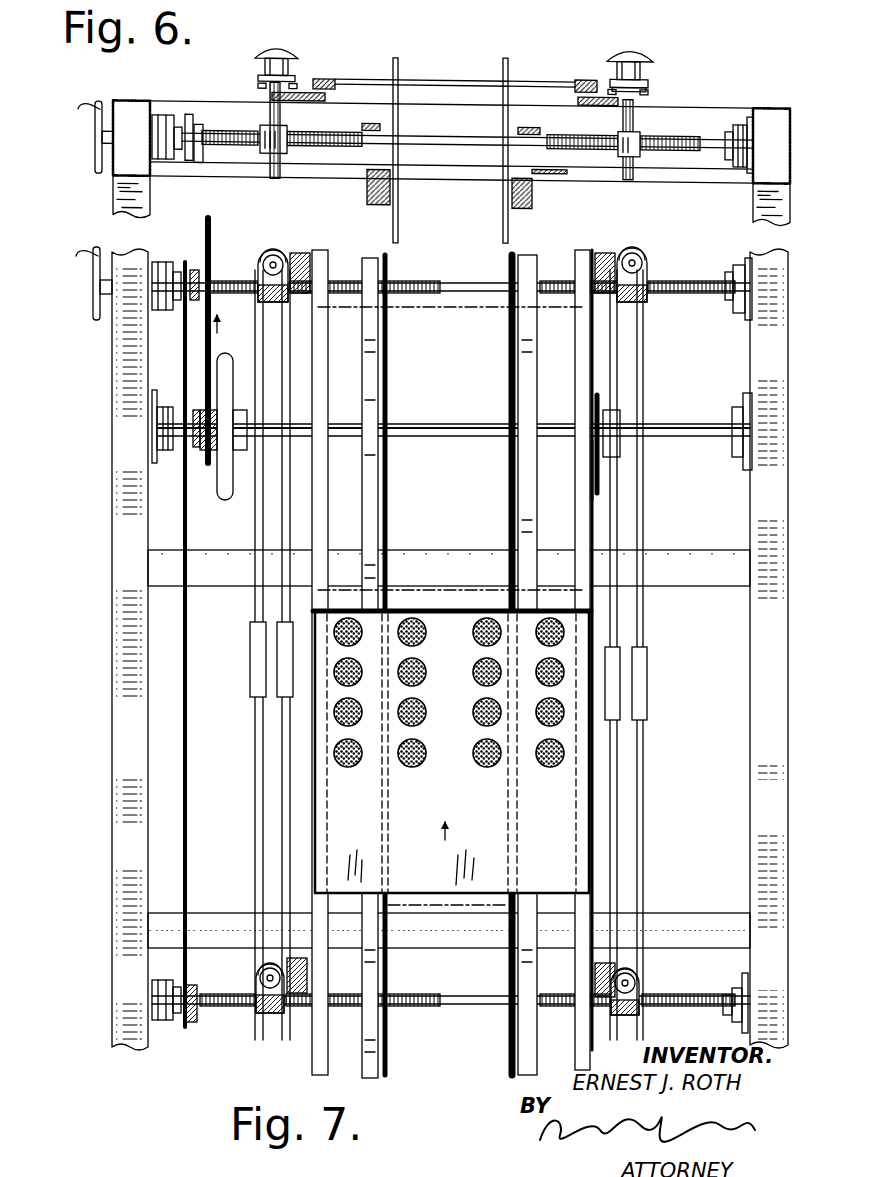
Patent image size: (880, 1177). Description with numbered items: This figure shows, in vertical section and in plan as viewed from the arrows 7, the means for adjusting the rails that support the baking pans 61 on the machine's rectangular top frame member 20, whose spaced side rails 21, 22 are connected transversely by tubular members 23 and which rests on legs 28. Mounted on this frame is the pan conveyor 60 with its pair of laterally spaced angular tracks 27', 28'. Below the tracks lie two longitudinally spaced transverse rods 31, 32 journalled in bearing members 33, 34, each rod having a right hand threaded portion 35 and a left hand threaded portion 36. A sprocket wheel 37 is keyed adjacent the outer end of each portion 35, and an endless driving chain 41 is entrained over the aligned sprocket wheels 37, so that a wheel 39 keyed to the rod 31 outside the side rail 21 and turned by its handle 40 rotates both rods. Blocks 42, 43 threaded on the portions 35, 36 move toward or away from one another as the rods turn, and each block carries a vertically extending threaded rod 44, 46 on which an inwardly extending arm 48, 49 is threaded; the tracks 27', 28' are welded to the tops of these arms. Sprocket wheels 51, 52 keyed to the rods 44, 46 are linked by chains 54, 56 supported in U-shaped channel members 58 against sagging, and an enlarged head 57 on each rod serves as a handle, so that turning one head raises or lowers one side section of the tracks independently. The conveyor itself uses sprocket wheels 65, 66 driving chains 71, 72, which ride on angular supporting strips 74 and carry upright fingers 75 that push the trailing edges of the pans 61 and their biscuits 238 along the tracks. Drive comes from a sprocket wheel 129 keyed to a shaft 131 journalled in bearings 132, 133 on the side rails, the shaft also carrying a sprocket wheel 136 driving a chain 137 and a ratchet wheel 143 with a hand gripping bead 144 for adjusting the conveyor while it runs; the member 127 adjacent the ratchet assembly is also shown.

In FIG. 6, the viewing arrows 7 is at (453, 42).
In FIG. 7, the rectangular top frame member 20 is at (108, 782).
In FIG. 6, the side rail 21 is at (125, 160).
In FIG. 7, the side rail 21 is at (122, 568).
In FIG. 6, the side rail 22 is at (772, 102).
In FIG. 7, the side rail 22 is at (768, 502).
In FIG. 6, the tubular members 23 is at (703, 152).
In FIG. 7, the tubular members 23 is at (682, 578).
In FIG. 6, the angular track or rail 27' is at (345, 55).
In FIG. 7, the angular track or rail 27' is at (307, 667).
In FIG. 6, the legs 28 is at (444, 208).
In FIG. 6, the angular track or rail 28' is at (593, 53).
In FIG. 7, the angular track or rail 28' is at (564, 660).
In FIG. 7, the transversely extending rod 31 is at (468, 285).
In FIG. 6, the transversely extending rod 32 is at (430, 133).
In FIG. 7, the transversely extending rod 32 is at (430, 1005).
In FIG. 6, the bearing member 33 is at (160, 112).
In FIG. 7, the bearing member 33 is at (162, 312).
In FIG. 6, the bearing member 34 is at (744, 102).
In FIG. 7, the bearing member 34 is at (738, 315).
In FIG. 6, the threaded portion 35 is at (217, 127).
In FIG. 7, the threaded portion 35 is at (240, 283).
In FIG. 6, the threaded portion 36 is at (690, 118).
In FIG. 7, the threaded portion 36 is at (685, 283).
In FIG. 6, the sprocket wheel 37 is at (192, 150).
In FIG. 7, the sprocket wheel 37 is at (195, 262).
In FIG. 6, the wheel 39 is at (93, 148).
In FIG. 7, the wheel 39 is at (92, 296).
In FIG. 6, the handle 40 is at (80, 104).
In FIG. 7, the handle 40 is at (78, 254).
In FIG. 6, the endless driving chain 41 is at (199, 160).
In FIG. 6, the block 42 is at (286, 133).
In FIG. 7, the block 42 is at (277, 293).
In FIG. 6, the block 43 is at (640, 133).
In FIG. 7, the block 43 is at (640, 300).
In FIG. 6, the vertically extending threaded rod 44 is at (268, 115).
In FIG. 7, the vertically extending threaded rod 44 is at (265, 250).
In FIG. 6, the vertically extending threaded rod 46 is at (622, 117).
In FIG. 7, the vertically extending threaded rod 46 is at (635, 255).
In FIG. 6, the inwardly extending arm 48 is at (320, 100).
In FIG. 7, the inwardly extending arm 48 is at (305, 255).
In FIG. 6, the inwardly extending arm 49 is at (580, 100).
In FIG. 7, the inwardly extending arm 49 is at (605, 255).
In FIG. 7, the sprocket wheel 51 is at (285, 258).
In FIG. 6, the sprocket wheel 52 is at (638, 74).
In FIG. 7, the sprocket wheel 52 is at (643, 262).
In FIG. 6, the chain 54 is at (296, 80).
In FIG. 7, the chain 54 is at (283, 780).
In FIG. 6, the chain 56 is at (648, 79).
In FIG. 7, the chain 56 is at (640, 775).
In FIG. 6, the enlarged head 57 is at (276, 48).
In FIG. 7, the U-shaped channel member 58 is at (280, 680).
In FIG. 6, the pan conveyor 60 is at (508, 60).
In FIG. 7, the pan conveyor 60 is at (505, 489).
In FIG. 7, the baking pan 61 is at (555, 838).
In FIG. 6, the sprocket wheel 65 is at (392, 178).
In FIG. 6, the sprocket wheel 66 is at (497, 157).
In FIG. 6, the chain 71 is at (508, 88).
In FIG. 7, the chain 71 is at (508, 348).
In FIG. 6, the chain 72 is at (394, 72).
In FIG. 7, the chain 72 is at (388, 377).
In FIG. 6, the angular supporting strip 74 is at (385, 200).
In FIG. 7, the angular supporting strip 74 is at (368, 507).
In FIG. 6, the upright finger 75 is at (518, 63).
In FIG. 7, the upright finger 75 is at (510, 306).
In FIG. 7, the clutch member 127 is at (605, 470).
In FIG. 7, the sprocket wheel 129 is at (618, 412).
In FIG. 7, the shaft 131 is at (447, 438).
In FIG. 7, the bearing 132 is at (165, 425).
In FIG. 7, the bearing 133 is at (733, 460).
In FIG. 7, the sprocket wheel 136 is at (197, 445).
In FIG. 7, the chain 137 is at (205, 347).
In FIG. 7, the wheel 143 is at (225, 485).
In FIG. 7, the hand gripping bead 144 is at (240, 455).
In FIG. 7, the biscuit or cake 238 is at (475, 712).